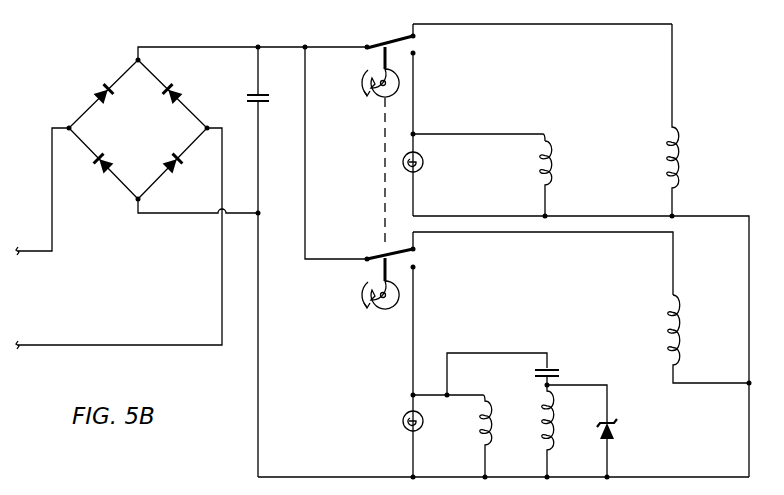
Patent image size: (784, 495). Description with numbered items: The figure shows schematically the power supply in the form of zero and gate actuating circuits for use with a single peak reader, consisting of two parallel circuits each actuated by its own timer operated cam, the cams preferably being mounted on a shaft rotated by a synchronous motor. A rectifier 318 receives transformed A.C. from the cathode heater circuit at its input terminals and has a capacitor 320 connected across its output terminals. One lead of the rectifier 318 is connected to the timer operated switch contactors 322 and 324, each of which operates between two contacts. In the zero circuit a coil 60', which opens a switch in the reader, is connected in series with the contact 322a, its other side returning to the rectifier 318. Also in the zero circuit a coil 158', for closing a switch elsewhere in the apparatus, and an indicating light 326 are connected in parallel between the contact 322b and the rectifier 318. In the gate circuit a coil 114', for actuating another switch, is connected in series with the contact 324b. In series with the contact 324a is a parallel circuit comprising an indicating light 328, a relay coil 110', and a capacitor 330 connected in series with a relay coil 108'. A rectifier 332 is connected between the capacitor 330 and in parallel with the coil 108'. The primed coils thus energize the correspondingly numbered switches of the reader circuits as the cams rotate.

The rectifier 318 is at (156, 136).
The capacitor 320 is at (252, 92).
The timer operated switch contactor 322 is at (378, 45).
The contact 322a is at (417, 38).
The contact 322b is at (417, 53).
The timer operated switch contactor 324 is at (378, 256).
The contact 324a is at (417, 267).
The contact 324b is at (417, 249).
The indicating light 326 is at (423, 158).
The indicating light 328 is at (402, 421).
The capacitor 330 is at (553, 368).
The rectifier 332 is at (610, 420).
The coil 60' is at (695, 120).
The coil 158' is at (571, 175).
The coil 114' is at (710, 340).
The relay coil 110' is at (465, 436).
The relay coil 108' is at (568, 431).